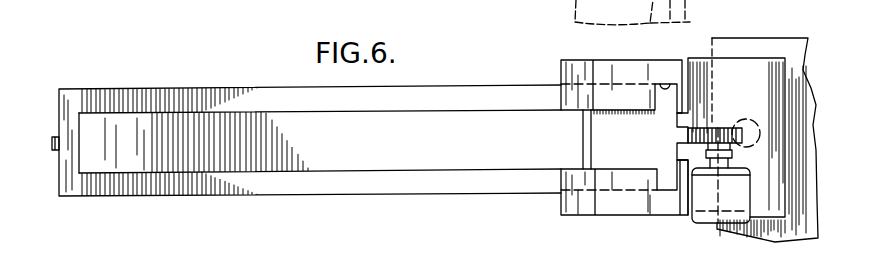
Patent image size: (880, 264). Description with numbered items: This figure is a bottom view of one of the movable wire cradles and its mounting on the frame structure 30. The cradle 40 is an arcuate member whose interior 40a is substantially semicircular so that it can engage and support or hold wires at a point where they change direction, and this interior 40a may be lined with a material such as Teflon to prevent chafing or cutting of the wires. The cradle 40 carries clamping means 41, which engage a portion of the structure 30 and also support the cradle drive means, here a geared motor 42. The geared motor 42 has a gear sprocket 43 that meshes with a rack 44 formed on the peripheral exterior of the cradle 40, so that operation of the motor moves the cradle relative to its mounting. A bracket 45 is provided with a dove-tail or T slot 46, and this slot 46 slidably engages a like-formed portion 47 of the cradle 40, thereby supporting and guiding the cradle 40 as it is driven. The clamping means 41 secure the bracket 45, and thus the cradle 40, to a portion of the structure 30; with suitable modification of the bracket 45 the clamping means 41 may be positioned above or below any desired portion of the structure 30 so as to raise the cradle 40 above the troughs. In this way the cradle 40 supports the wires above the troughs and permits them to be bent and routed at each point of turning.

The frame structure 30 is at (808, 40).
The wire cradle 40 is at (392, 197).
The interior periphery 40a is at (500, 157).
The clamping means 41 is at (752, 118).
The geared motor 42 is at (706, 208).
The gear sprocket 43 is at (730, 126).
The rack 44 is at (50, 141).
The bracket 45 is at (738, 57).
The dove-tail or T slot 46 is at (667, 80).
The like-formed portion 47 is at (79, 100).